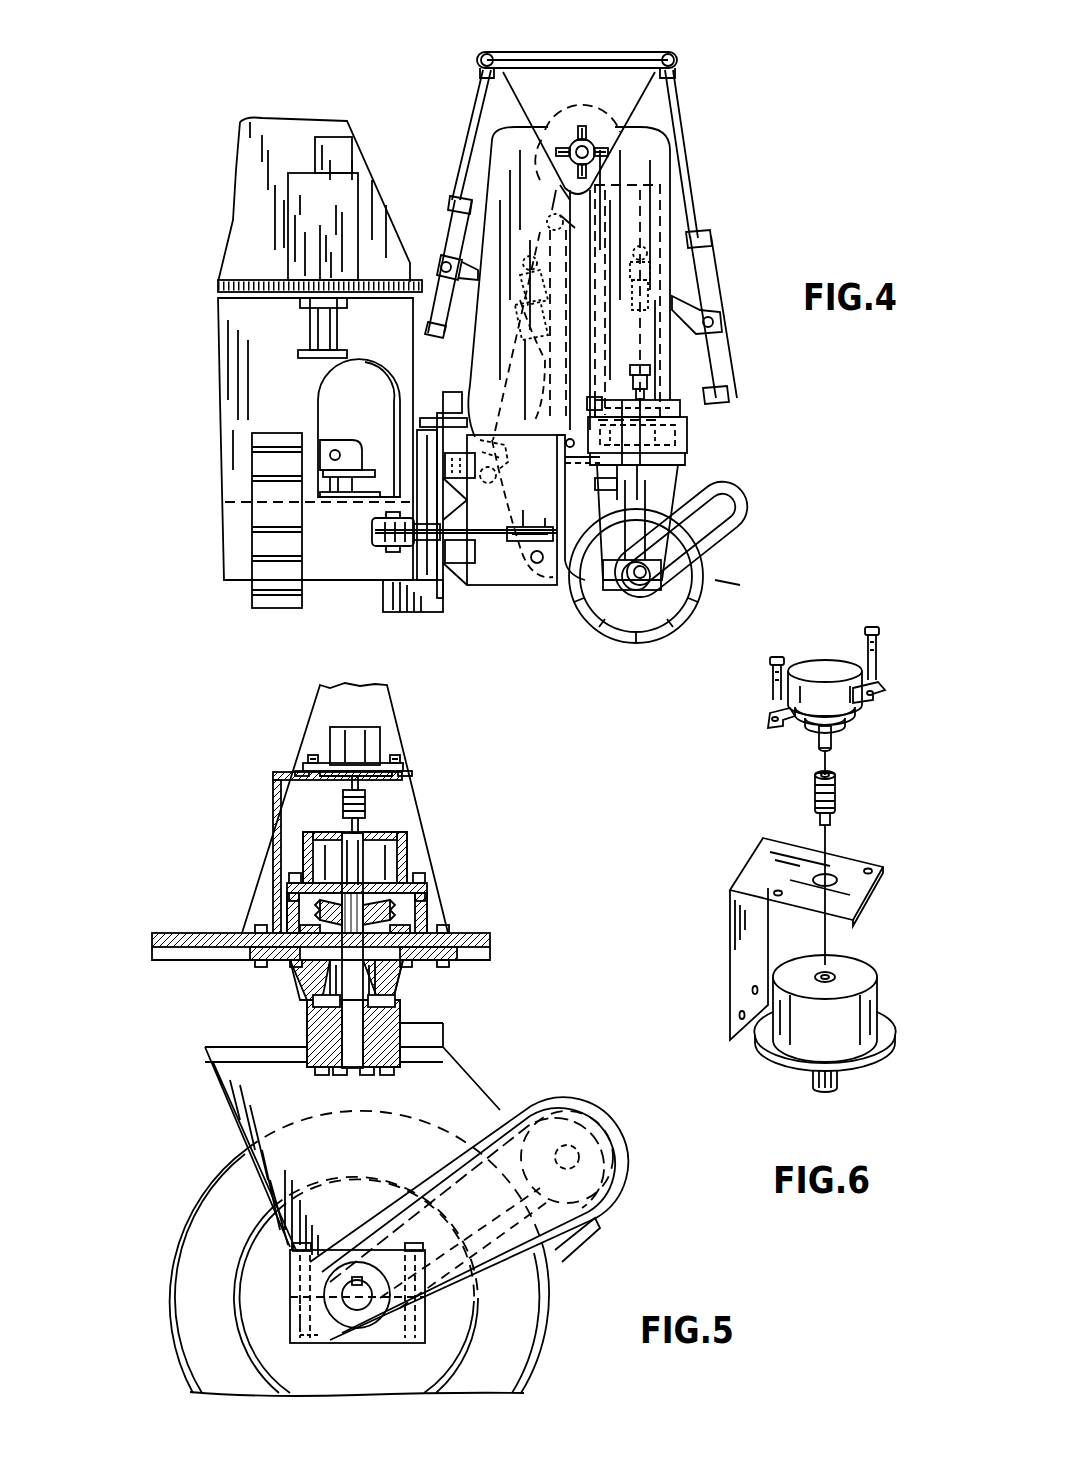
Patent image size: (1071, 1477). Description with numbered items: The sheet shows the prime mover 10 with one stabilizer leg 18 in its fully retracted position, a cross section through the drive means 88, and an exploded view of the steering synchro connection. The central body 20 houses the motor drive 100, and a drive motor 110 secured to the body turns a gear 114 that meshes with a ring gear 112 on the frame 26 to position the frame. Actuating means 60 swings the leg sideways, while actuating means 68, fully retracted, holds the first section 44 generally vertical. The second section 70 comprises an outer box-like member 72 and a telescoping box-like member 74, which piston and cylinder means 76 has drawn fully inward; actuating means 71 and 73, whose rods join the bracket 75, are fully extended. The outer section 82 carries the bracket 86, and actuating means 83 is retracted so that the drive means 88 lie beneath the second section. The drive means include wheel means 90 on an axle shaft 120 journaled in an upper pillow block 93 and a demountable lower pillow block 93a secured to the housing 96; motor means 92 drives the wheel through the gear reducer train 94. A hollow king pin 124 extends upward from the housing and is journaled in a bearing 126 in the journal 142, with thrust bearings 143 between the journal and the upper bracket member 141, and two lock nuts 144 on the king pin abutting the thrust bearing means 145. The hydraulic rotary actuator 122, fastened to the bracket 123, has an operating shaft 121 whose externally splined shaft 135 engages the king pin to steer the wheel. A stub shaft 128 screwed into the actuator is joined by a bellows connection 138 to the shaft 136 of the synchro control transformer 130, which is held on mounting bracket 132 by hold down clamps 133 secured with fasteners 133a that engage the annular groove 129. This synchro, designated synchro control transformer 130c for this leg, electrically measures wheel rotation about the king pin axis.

In FIG. 4, the prime mover 10 is at (427, 148).
In FIG. 4, the stabilizer leg 18 is at (720, 572).
In FIG. 4, the central body 20 is at (275, 409).
In FIG. 4, the frame 26 is at (258, 254).
In FIG. 4, the first section 44 is at (460, 355).
In FIG. 4, the actuating means 60 is at (420, 540).
In FIG. 4, the actuating means 68 is at (503, 345).
In FIG. 4, the second section 70 is at (640, 163).
In FIG. 4, the actuating means 71 is at (446, 230).
In FIG. 4, the outer box-like member 72 is at (673, 170).
In FIG. 4, the actuating means 73 is at (700, 268).
In FIG. 4, the telescoping box-like member 74 is at (690, 400).
In FIG. 4, the bracket 75 is at (588, 85).
In FIG. 4, the piston and cylinder means 76 is at (547, 242).
In FIG. 5, the outer section 82 is at (490, 940).
In FIG. 4, the actuating means 83 is at (642, 345).
In FIG. 4, the bracket 86 is at (690, 430).
In FIG. 4, the drive means 88 is at (575, 610).
In FIG. 5, the drive means 88 is at (150, 1247).
In FIG. 5, the wheel means 90 is at (193, 1283).
In FIG. 5, the motor means 92 is at (585, 1135).
In FIG. 5, the pillow block 93 is at (290, 1277).
In FIG. 5, the pillow block 93a is at (316, 1343).
In FIG. 4, the gear reducer train 94 is at (708, 520).
In FIG. 5, the gear reducer train 94 is at (497, 1247).
In FIG. 4, the housing 96 is at (653, 503).
In FIG. 5, the housing 96 is at (247, 1102).
In FIG. 4, the motor drive 100 is at (347, 492).
In FIG. 4, the drive motor 110 is at (320, 333).
In FIG. 4, the ring gear 112 is at (222, 284).
In FIG. 4, the gear 114 is at (333, 272).
In FIG. 5, the axle shaft 120 is at (340, 1305).
In FIG. 5, the operating shaft 121 is at (343, 855).
In FIG. 5, the hydraulic rotary actuator 122 is at (402, 850).
In FIG. 6, the hydraulic rotary actuator 122 is at (850, 970).
In FIG. 5, the bracket 123 is at (422, 890).
In FIG. 5, the king pin 124 is at (380, 985).
In FIG. 5, the bearing 126 is at (370, 965).
In FIG. 5, the stub shaft 128 is at (365, 826).
In FIG. 6, the stub shaft 128 is at (838, 822).
In FIG. 6, the annular groove 129 is at (812, 725).
In FIG. 5, the synchro control transformer 130 is at (365, 735).
In FIG. 6, the synchro control transformer 130 is at (825, 670).
In FIG. 4, the synchro control transformer 130c is at (690, 440).
In FIG. 5, the mounting bracket 132 is at (275, 775).
In FIG. 6, the mounting bracket 132 is at (860, 868).
In FIG. 5, the synchro hold down clamp 133 is at (392, 773).
In FIG. 6, the synchro hold down clamp 133 is at (770, 717).
In FIG. 5, the fastener 133a is at (318, 763).
In FIG. 6, the fastener 133a is at (775, 670).
In FIG. 5, the externally splined shaft 135 is at (422, 912).
In FIG. 6, the externally splined shaft 135 is at (838, 1078).
In FIG. 5, the shaft 136 is at (345, 795).
In FIG. 6, the shaft 136 is at (822, 738).
In FIG. 5, the bellows connection 138 is at (366, 805).
In FIG. 6, the bellows connection 138 is at (838, 790).
In FIG. 5, the upper bracket member 141 is at (395, 1040).
In FIG. 5, the journal 142 is at (300, 968).
In FIG. 5, the thrust bearings 143 is at (320, 1000).
In FIG. 5, the lock nuts 144 is at (290, 886).
In FIG. 5, the thrust bearing means 145 is at (430, 918).